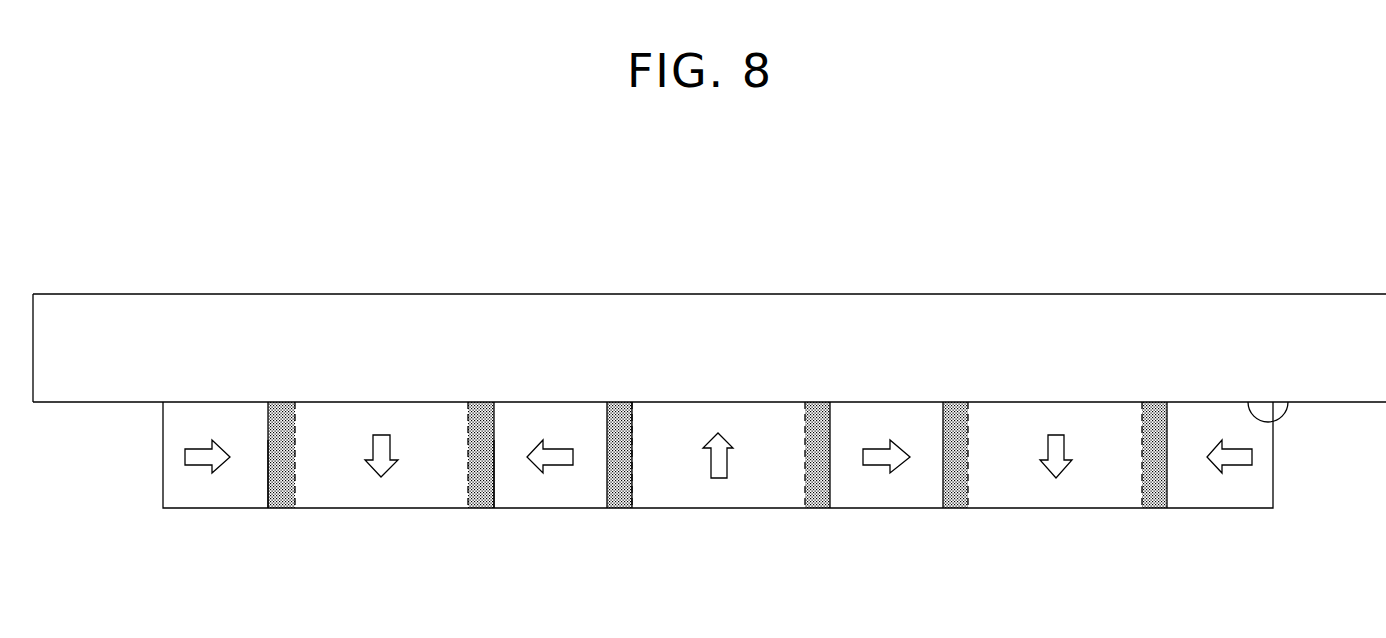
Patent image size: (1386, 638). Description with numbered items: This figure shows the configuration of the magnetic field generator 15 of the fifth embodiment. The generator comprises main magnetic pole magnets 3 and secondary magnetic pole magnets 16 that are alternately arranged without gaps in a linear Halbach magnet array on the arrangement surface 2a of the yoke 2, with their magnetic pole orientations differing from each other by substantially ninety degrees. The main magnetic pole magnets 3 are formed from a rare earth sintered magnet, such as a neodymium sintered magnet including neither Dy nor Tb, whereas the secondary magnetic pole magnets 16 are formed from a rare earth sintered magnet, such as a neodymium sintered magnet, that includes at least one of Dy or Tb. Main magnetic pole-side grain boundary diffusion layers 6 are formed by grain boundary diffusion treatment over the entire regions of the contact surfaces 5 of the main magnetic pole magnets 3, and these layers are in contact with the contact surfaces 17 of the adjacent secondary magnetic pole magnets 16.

The yoke 2 is at (721, 340).
The arrangement surface 2a is at (1288, 402).
The main magnetic pole magnet 3 is at (385, 490).
The contact surface 5 is at (268, 478).
The main magnetic pole-side grain boundary diffusion layer 6 is at (287, 415).
The magnetic field generator 15 is at (1066, 282).
The secondary magnetic pole magnet 16 is at (186, 490).
The contact surface 17 is at (272, 455).